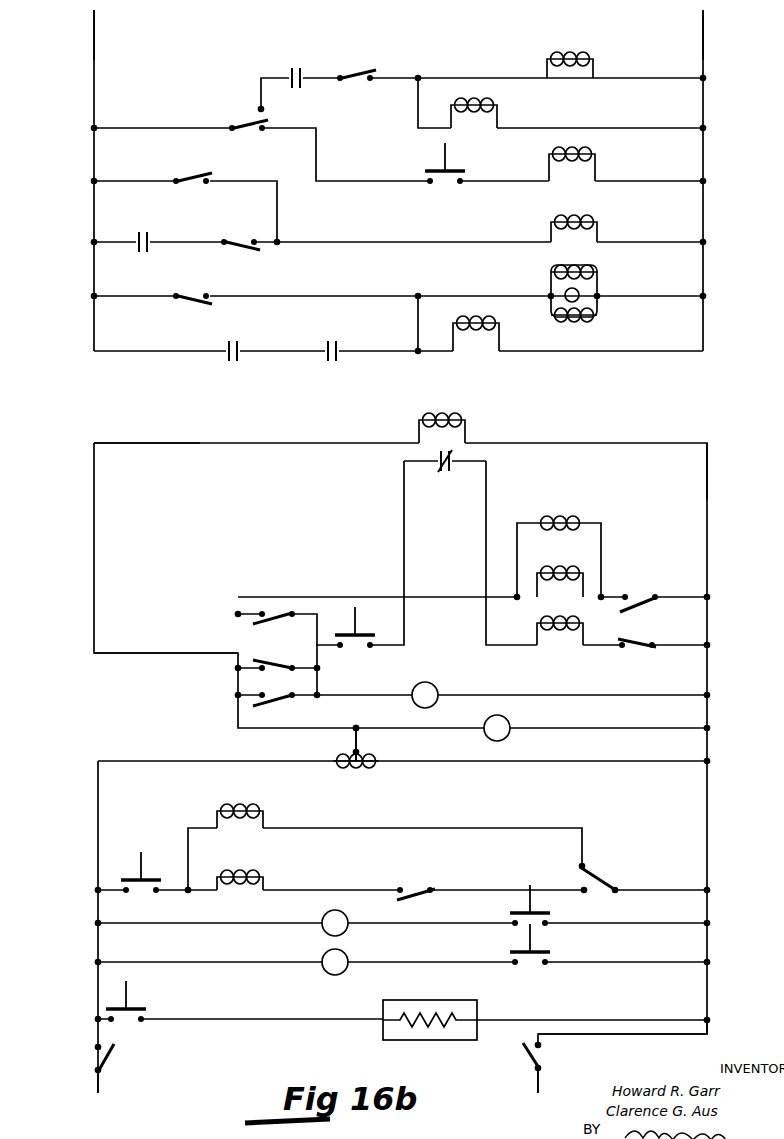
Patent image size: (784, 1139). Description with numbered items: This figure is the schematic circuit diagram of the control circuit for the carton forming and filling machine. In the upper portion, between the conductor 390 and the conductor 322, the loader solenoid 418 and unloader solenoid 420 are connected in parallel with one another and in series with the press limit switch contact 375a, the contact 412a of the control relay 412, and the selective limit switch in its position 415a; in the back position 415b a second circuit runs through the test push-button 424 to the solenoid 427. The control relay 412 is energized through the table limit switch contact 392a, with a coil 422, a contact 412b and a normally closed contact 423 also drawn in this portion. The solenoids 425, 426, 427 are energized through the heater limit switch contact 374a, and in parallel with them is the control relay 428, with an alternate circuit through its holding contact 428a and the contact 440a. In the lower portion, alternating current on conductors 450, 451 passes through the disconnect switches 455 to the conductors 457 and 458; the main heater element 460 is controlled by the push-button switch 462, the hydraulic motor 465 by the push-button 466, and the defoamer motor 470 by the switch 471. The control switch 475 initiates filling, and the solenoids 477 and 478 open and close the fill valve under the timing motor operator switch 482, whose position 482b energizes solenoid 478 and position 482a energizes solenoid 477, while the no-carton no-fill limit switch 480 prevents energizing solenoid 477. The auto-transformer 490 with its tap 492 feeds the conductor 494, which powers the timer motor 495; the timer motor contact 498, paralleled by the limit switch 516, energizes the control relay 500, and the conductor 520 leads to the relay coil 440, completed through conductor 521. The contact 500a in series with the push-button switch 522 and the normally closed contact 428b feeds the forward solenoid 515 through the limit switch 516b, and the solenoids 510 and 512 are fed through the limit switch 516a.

The conductor 390 is at (95, 27).
The conductor 322 is at (705, 28).
The contact of control relay 412a is at (296, 70).
The second limit switch contact of press limit switch 375a is at (357, 72).
The selective limit switch position 415a is at (259, 107).
The retarded or back position of limit switch 415b is at (264, 131).
The second contact of table limit switch 392a is at (197, 175).
The loader solenoid 418 is at (574, 40).
The unloader solenoid 420 is at (498, 102).
The relay coil 422 is at (596, 152).
The normally closed contact 423 is at (446, 188).
The control relay 412 is at (595, 218).
The contact of relay 412 412b is at (142, 235).
The push-button 424 is at (239, 238).
The solenoid 425 is at (550, 273).
The solenoid 426 is at (594, 290).
The solenoid 427 is at (596, 319).
The second limit switch of heater limit switch 374a is at (198, 294).
The control relay 428 is at (500, 323).
The holding contact of relay 428a is at (233, 360).
The contact of control relay 440a is at (332, 360).
The relay coil 440 is at (456, 416).
The conductor 521 is at (709, 456).
The conductor 520 is at (152, 447).
The normally closed contact of control relay 428b is at (438, 470).
The hydraulic sealing solenoid 510 is at (557, 520).
The solenoid 512 is at (557, 570).
The contact of timing relay 500a is at (292, 592).
The second limit switch 516a is at (641, 605).
The conductor 494 is at (236, 647).
The push-button switch 522 is at (363, 650).
The solenoid coil 515 is at (560, 632).
The normally closed limit switch 516b is at (634, 640).
The timer motor contact 498 is at (268, 671).
The control relay 500 is at (431, 685).
The normally open limit switch 516 is at (268, 697).
The timer motor 495 is at (505, 717).
The tap 492 is at (360, 752).
The auto-transformer 490 is at (348, 767).
The solenoid 478 is at (240, 806).
The solenoid 477 is at (240, 872).
The control switch 475 is at (143, 891).
The limit switch 480 is at (417, 886).
The switch position 482b is at (581, 866).
The switch position 482a is at (582, 888).
The two position timing motor operator switch 482 is at (642, 854).
The control push-button or on-off switch 471 is at (528, 908).
The defoamer motor 470 is at (322, 915).
The push-button 466 is at (541, 951).
The hydraulic motor 465 is at (348, 958).
The conductor 457 is at (96, 1041).
The on-off type push-button switch 462 is at (128, 1012).
The disconnect switches 455 is at (108, 1059).
The conductor 450 is at (98, 1088).
The conductor 451 is at (538, 1080).
The main heater element 460 is at (382, 1036).
The conductor 458 is at (618, 1036).